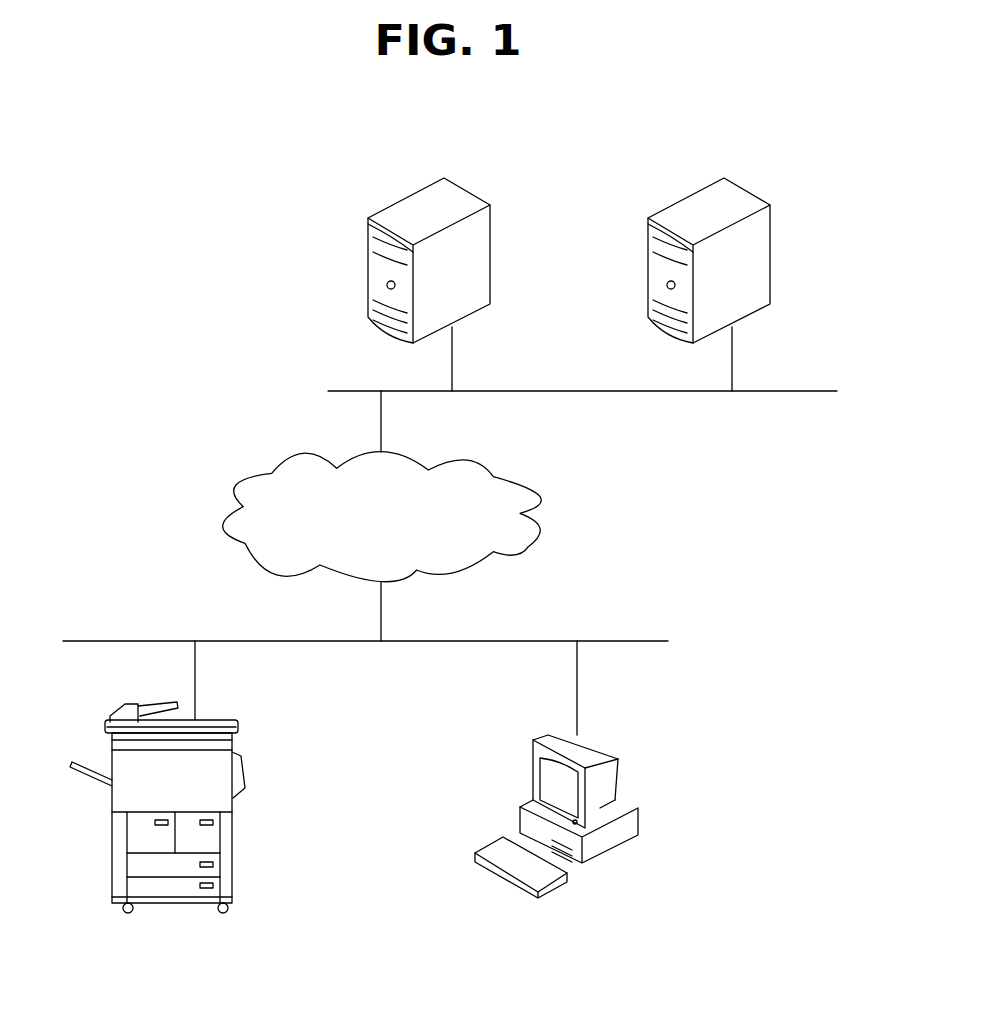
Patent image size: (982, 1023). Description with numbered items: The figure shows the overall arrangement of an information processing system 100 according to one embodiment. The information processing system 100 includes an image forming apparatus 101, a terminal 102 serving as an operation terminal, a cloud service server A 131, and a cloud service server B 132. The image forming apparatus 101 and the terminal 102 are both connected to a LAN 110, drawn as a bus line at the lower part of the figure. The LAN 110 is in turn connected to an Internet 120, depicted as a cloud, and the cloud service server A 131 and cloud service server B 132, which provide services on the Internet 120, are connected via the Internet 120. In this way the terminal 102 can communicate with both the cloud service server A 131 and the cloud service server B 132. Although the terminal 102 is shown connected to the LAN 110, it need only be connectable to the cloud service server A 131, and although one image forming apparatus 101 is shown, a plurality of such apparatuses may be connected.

The information processing system 100 is at (382, 930).
The image forming apparatus 101 is at (217, 721).
The terminal 102 is at (595, 743).
The LAN 110 is at (172, 641).
The Internet 120 is at (541, 497).
The cloud service server A 131 is at (492, 225).
The cloud service server B 132 is at (772, 225).